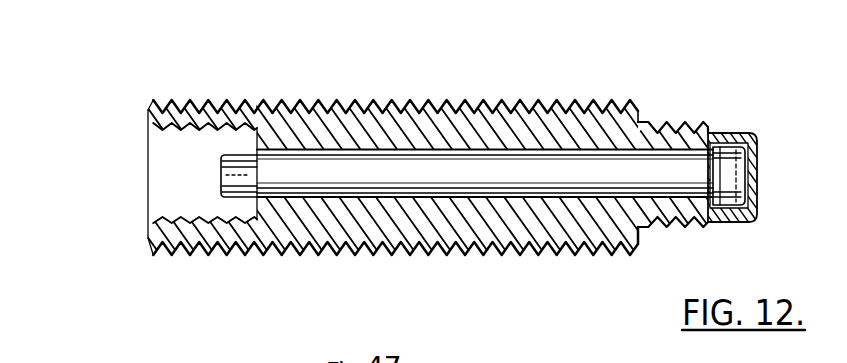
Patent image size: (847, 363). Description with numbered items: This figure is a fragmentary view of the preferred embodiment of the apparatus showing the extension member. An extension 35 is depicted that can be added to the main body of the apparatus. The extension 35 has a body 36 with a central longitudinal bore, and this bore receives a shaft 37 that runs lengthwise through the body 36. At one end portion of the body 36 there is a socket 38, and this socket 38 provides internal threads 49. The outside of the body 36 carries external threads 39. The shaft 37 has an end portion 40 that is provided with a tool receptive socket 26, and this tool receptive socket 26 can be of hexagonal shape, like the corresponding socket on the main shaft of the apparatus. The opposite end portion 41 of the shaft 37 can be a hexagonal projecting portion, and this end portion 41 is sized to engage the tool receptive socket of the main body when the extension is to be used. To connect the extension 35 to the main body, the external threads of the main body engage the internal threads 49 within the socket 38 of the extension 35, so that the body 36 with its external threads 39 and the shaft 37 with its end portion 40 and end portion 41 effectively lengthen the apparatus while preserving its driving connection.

The tool receptive socket 26 is at (760, 196).
The extension 35 is at (335, 108).
The body 36 is at (642, 116).
The shaft 37 is at (415, 168).
The socket 38 is at (178, 172).
The external threads 39 is at (292, 99).
The end portion 40 is at (731, 171).
The end portion 41 is at (221, 186).
The internal threads 49 is at (172, 129).